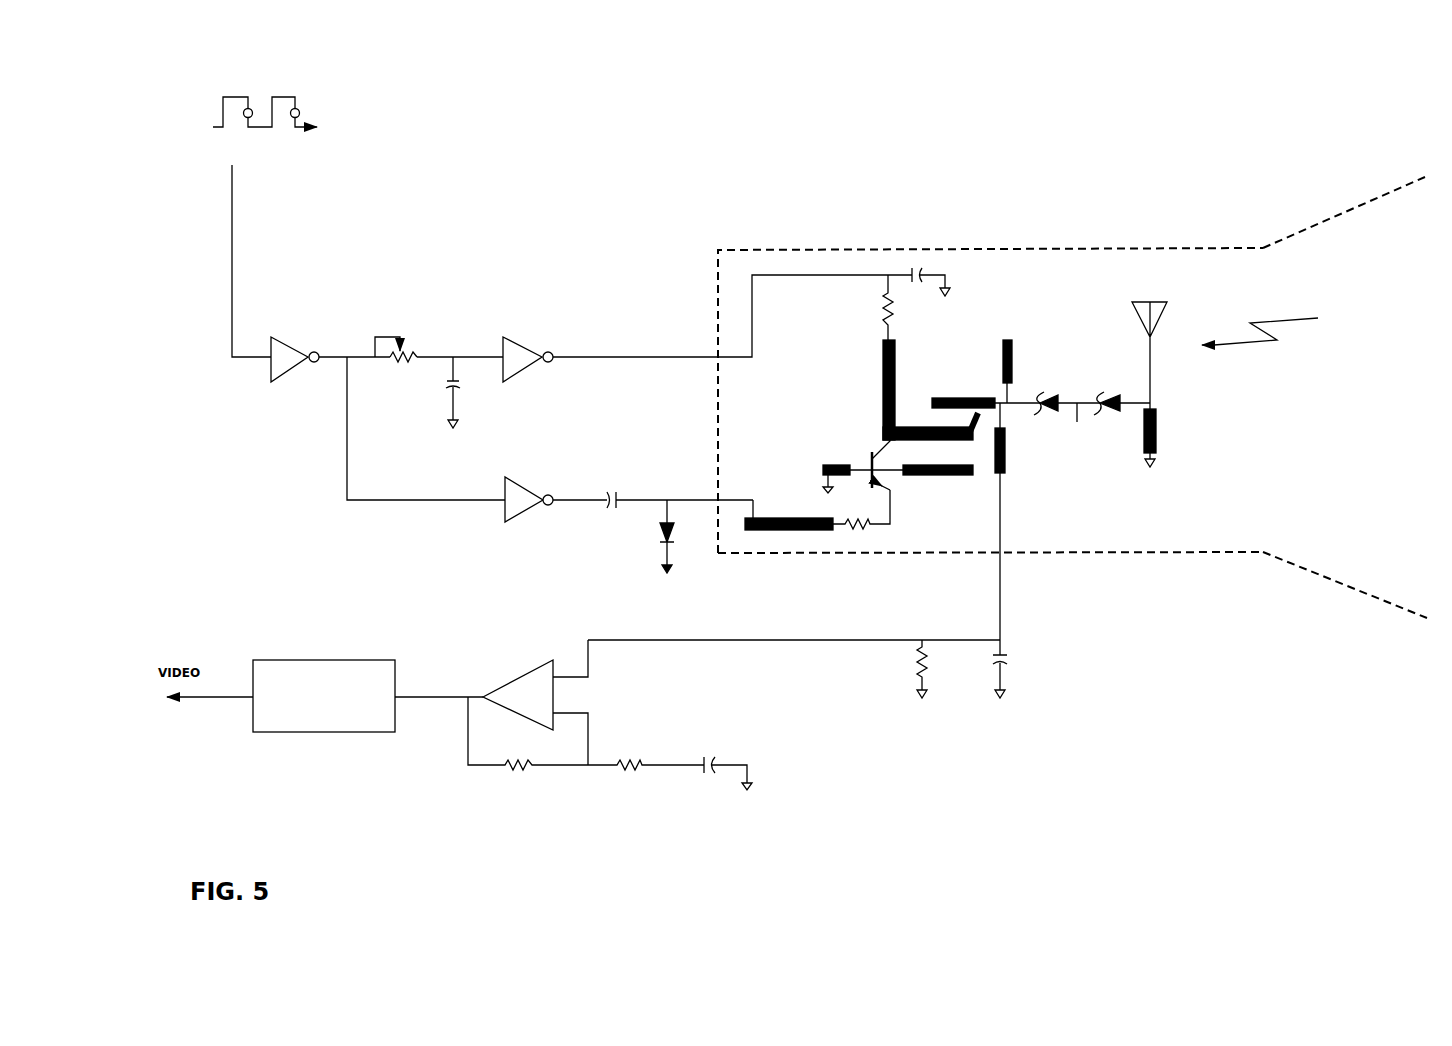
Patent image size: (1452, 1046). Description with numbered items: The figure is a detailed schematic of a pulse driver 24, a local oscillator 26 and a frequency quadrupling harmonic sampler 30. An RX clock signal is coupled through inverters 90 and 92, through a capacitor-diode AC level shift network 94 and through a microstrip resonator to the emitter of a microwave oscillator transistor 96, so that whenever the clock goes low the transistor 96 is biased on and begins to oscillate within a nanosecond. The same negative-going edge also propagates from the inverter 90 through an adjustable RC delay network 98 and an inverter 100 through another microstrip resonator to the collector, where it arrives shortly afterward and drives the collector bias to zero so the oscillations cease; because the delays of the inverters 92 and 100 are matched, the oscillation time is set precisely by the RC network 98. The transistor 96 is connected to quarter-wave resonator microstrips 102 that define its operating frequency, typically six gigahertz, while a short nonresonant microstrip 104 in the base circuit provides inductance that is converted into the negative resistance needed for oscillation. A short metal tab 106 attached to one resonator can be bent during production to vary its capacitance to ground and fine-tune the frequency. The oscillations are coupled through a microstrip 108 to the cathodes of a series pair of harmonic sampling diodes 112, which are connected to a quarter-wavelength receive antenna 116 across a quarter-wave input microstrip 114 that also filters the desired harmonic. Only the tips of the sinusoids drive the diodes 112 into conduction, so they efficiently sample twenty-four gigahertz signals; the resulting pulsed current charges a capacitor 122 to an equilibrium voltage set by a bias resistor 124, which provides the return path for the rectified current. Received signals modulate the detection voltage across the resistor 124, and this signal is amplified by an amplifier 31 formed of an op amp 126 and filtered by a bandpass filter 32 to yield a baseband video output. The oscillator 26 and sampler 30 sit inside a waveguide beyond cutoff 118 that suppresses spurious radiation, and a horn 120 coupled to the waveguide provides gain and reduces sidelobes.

The pulse driver 24 is at (524, 157).
The local oscillator 26 is at (946, 190).
The frequency quadrupling harmonic sampler 30 is at (1136, 588).
The amplifier 31 is at (591, 801).
The bandpass filter 32 is at (323, 732).
The inverter 90 is at (303, 350).
The inverter 92 is at (541, 491).
The capacitor-diode AC level shift network 94 is at (609, 539).
The microwave oscillator transistor 96 is at (868, 462).
The RC delay network 98 is at (424, 332).
The inverter 100 is at (532, 346).
The quarter-wave resonator microstrips 102 is at (931, 508).
The short microstrip 104 is at (820, 462).
The metal tab 106 is at (983, 425).
The microstrip 108 is at (963, 398).
The harmonic sampling diodes 112 is at (1089, 462).
The quarter-wave microstrip 114 is at (1168, 449).
The receive antenna 116 is at (1150, 296).
The waveguide beyond cutoff 118 is at (1060, 247).
The horn 120 is at (1333, 213).
The capacitor 122 is at (1020, 670).
The bias resistor 124 is at (940, 672).
The op amp 126 is at (518, 672).